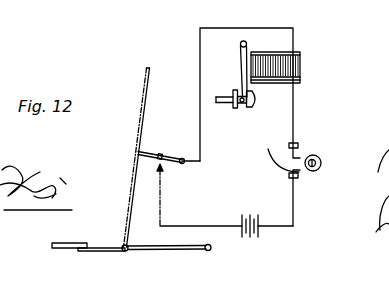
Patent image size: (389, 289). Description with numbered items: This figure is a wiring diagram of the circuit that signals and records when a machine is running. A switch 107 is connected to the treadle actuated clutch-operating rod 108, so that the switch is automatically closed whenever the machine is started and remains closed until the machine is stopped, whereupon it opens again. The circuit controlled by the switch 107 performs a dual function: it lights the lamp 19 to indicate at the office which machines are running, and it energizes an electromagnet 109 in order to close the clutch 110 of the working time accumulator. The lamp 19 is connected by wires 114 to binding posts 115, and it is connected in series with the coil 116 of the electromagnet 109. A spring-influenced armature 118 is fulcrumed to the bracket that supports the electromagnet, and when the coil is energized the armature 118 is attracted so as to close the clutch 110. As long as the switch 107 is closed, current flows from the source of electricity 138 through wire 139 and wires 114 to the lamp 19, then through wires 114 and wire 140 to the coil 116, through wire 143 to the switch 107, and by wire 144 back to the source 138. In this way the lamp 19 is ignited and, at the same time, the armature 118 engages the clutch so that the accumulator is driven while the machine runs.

The lamp 19 is at (326, 163).
The switch 107 is at (162, 151).
The clutch-operating rod 108 is at (134, 170).
The electromagnet 109 is at (303, 58).
The clutch 110 is at (262, 100).
The wires 114 is at (298, 157).
The binding posts 115 is at (288, 145).
The coil 116 is at (275, 40).
The armature 118 is at (244, 62).
The source of electricity 138 is at (249, 232).
The wire 139 is at (303, 217).
The wire 140 is at (297, 101).
The wire 143 is at (231, 25).
The wire 144 is at (191, 223).